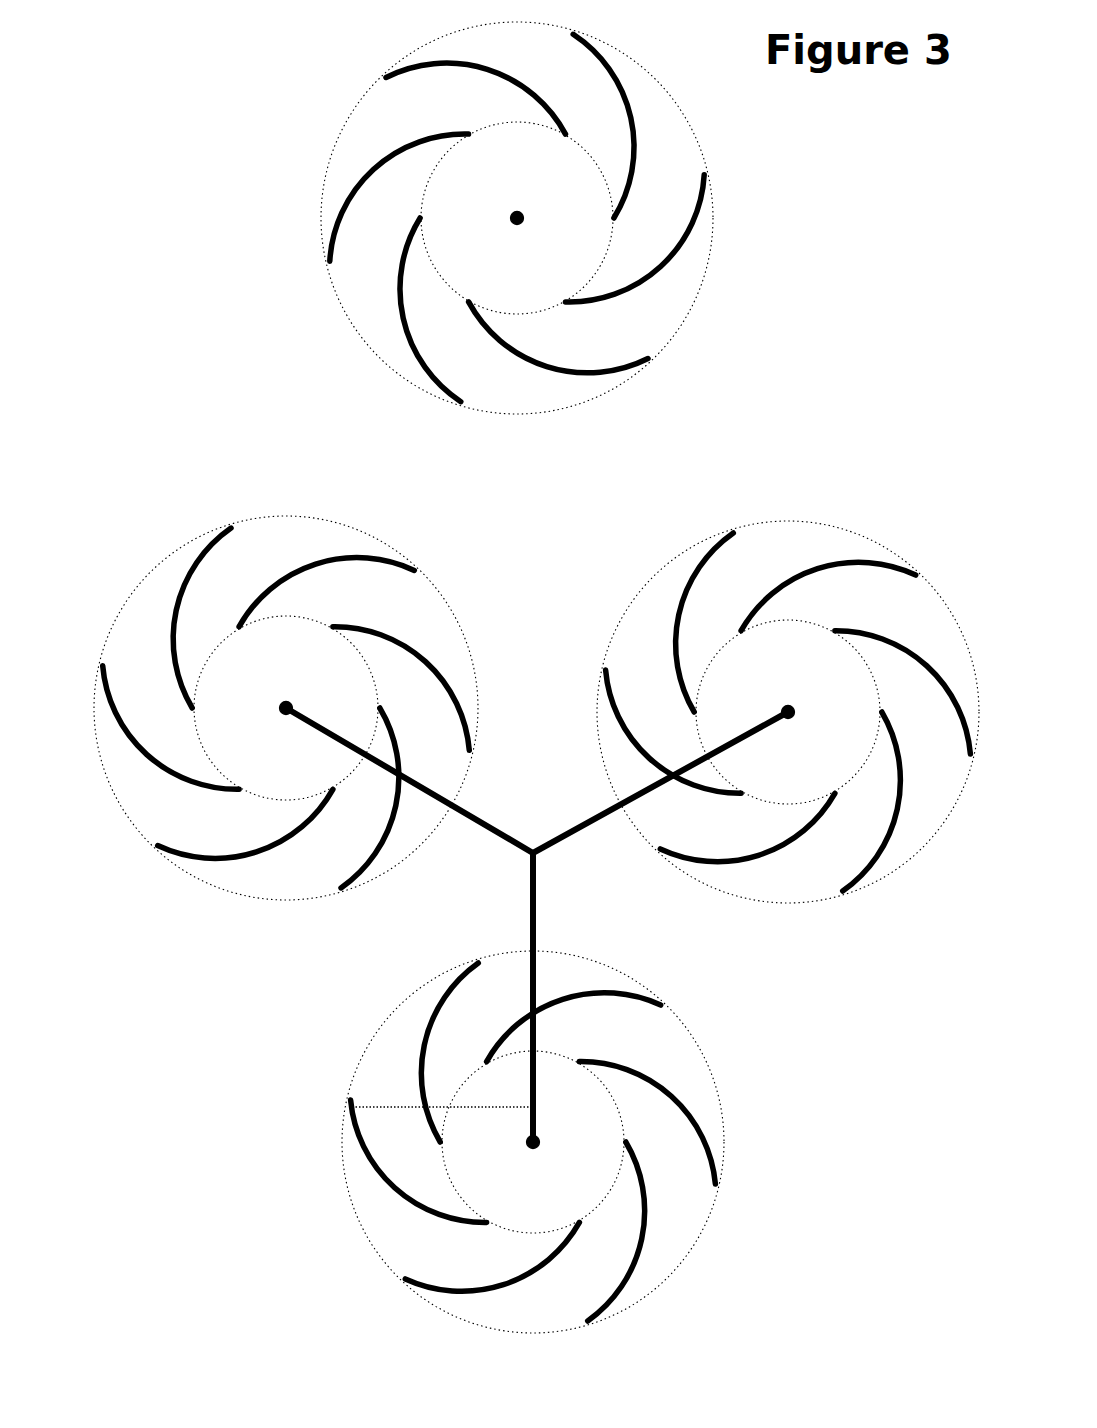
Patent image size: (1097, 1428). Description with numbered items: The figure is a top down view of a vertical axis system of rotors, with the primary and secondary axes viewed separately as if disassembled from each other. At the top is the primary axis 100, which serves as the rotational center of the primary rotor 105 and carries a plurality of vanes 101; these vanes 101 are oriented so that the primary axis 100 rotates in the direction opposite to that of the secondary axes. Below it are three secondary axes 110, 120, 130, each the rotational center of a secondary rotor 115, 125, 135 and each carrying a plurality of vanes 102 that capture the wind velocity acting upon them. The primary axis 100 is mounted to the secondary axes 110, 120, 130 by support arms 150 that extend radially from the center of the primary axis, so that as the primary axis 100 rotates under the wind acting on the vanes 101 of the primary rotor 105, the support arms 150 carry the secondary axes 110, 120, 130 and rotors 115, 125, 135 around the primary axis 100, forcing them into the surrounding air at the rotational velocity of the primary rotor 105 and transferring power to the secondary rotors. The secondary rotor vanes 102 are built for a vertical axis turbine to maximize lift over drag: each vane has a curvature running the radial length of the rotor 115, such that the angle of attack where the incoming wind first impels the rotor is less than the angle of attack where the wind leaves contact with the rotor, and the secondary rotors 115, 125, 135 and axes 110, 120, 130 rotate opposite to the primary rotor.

The primary axis 100 is at (522, 220).
The vanes of the primary axis 101 is at (477, 62).
The vanes of the secondary axes 102 is at (353, 554).
The primary rotor 105 is at (341, 307).
The secondary axis 110 is at (286, 708).
The secondary rotor 115 is at (145, 586).
The secondary axis 120 is at (350, 1107).
The secondary rotor 125 is at (360, 1217).
The secondary axis 130 is at (782, 709).
The secondary rotor 135 is at (664, 570).
The support arms 150 is at (498, 836).